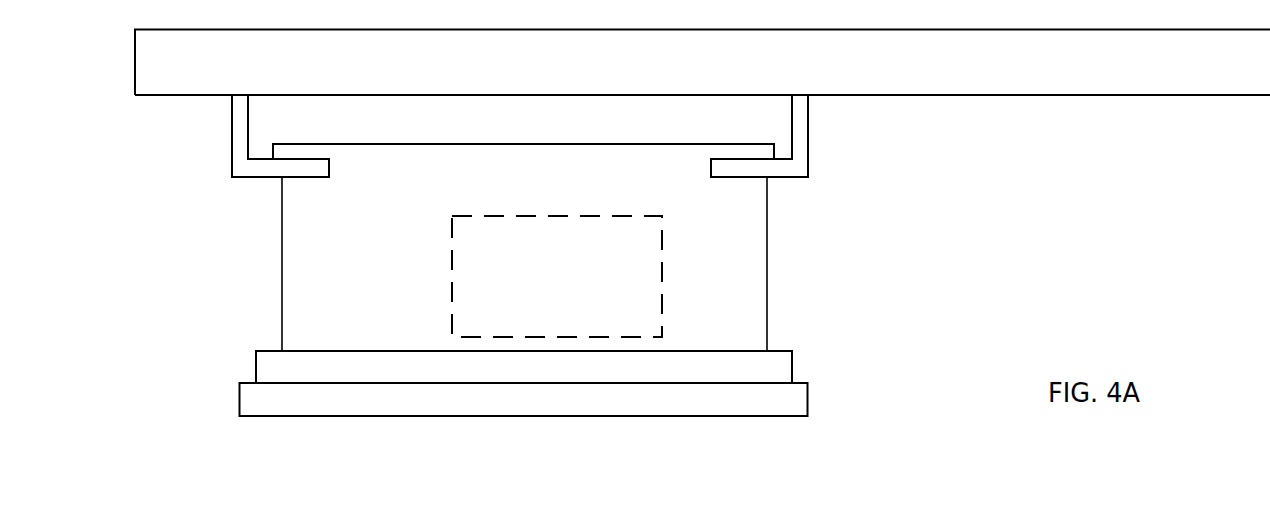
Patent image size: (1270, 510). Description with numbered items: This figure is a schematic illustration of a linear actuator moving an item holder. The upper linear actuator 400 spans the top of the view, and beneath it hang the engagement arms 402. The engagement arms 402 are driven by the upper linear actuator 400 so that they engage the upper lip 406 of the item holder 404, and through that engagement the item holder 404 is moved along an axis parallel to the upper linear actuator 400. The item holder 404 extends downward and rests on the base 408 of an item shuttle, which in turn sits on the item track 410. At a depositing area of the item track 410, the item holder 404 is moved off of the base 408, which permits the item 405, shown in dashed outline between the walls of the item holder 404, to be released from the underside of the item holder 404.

The upper linear actuator 400 is at (992, 95).
The engagement arms 402 is at (808, 159).
The item holder 404 is at (767, 228).
The item 405 is at (661, 262).
The upper lip 406 is at (378, 159).
The base 408 is at (797, 351).
The item track 410 is at (777, 416).